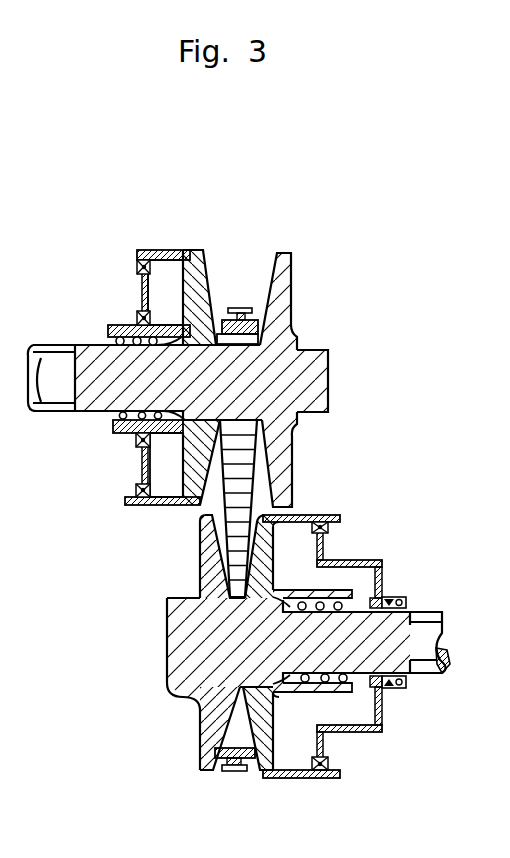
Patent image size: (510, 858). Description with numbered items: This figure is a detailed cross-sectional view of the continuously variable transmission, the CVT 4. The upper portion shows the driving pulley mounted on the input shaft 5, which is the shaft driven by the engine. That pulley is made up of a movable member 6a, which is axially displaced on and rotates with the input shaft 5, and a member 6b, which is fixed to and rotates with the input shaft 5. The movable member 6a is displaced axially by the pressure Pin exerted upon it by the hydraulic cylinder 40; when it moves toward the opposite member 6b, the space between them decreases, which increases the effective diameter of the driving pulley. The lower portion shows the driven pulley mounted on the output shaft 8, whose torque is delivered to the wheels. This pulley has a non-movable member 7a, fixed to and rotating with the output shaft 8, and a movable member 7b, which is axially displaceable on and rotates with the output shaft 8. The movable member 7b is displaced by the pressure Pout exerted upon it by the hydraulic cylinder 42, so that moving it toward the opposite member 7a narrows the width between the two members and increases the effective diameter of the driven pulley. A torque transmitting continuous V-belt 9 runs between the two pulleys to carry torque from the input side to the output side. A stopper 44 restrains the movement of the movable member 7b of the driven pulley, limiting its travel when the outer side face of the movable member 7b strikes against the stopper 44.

The CVT 4 is at (306, 240).
The input shaft 5 is at (80, 402).
The movable member 6a is at (201, 278).
The fixed member 6b is at (285, 291).
The non-movable member 7a is at (205, 752).
The movable member 7b is at (265, 752).
The output shaft 8 is at (427, 676).
The V-belt 9 is at (237, 306).
The hydraulic cylinder 40 is at (160, 294).
The hydraulic cylinder 42 is at (298, 558).
The stopper 44 is at (403, 597).
The pressure Pin is at (164, 262).
The pressure Pout is at (340, 720).